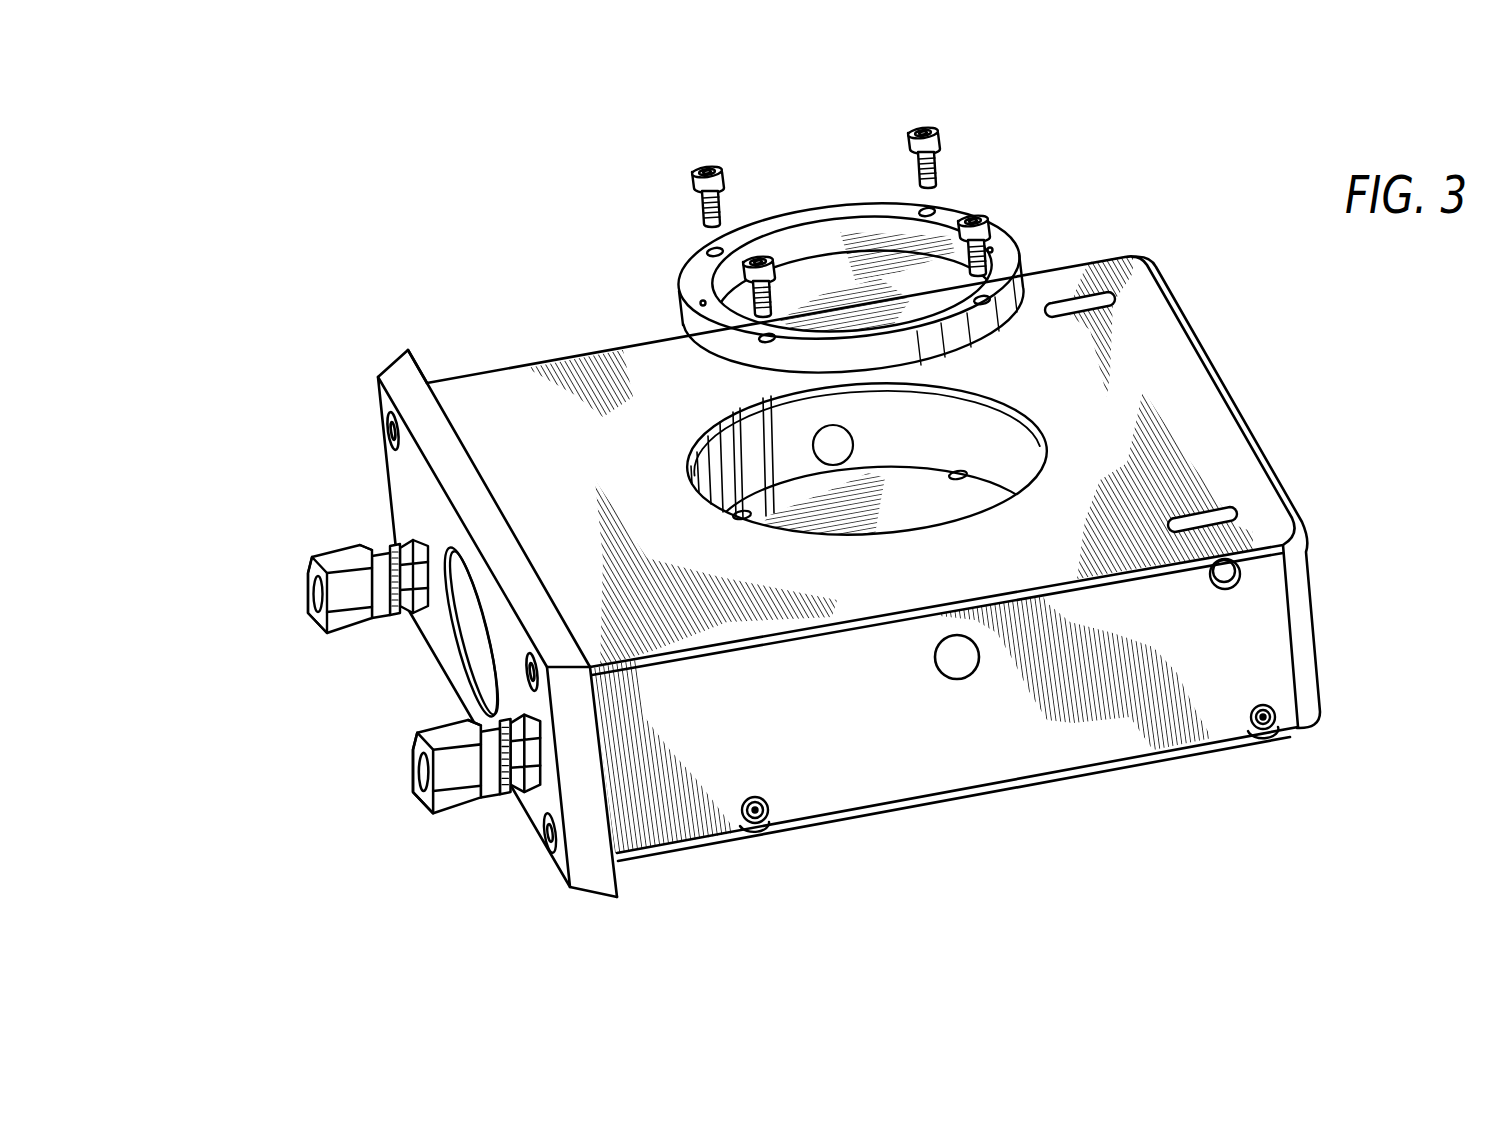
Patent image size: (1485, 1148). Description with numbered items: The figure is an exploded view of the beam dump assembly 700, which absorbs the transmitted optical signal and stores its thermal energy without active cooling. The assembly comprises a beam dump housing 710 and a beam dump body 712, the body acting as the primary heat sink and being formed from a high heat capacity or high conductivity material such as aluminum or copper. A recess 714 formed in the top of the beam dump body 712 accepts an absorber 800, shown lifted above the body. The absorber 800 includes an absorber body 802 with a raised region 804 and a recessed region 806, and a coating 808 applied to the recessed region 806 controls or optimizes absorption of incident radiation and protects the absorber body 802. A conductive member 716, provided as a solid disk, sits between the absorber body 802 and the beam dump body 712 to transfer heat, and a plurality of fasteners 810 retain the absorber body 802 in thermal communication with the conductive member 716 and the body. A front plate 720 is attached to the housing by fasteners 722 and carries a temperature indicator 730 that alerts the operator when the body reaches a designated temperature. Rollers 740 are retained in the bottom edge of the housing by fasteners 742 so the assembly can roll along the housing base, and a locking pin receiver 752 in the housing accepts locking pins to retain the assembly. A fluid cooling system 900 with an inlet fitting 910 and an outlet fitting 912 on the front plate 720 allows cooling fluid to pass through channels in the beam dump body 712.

The beam dump assembly 700 is at (297, 188).
The beam dump housing 710 is at (472, 377).
The beam dump body 712 is at (540, 390).
The recess 714 is at (728, 480).
The conductive member 716 is at (982, 480).
The front plate 720 is at (590, 875).
The fasteners 722 is at (545, 830).
The temperature indicator 730 is at (472, 632).
The rollers 740 is at (753, 828).
The fasteners 742 is at (757, 811).
The locking pin receiver 752 is at (1228, 572).
The absorber 800 is at (631, 185).
The absorber body 802 is at (698, 278).
The raised region 804 is at (777, 222).
The recessed region 806 is at (853, 238).
The coating 808 is at (927, 258).
The fasteners 810 is at (923, 135).
The fluid cooling system 900 is at (292, 603).
The inlet fitting 910 is at (420, 746).
The outlet fitting 912 is at (322, 548).